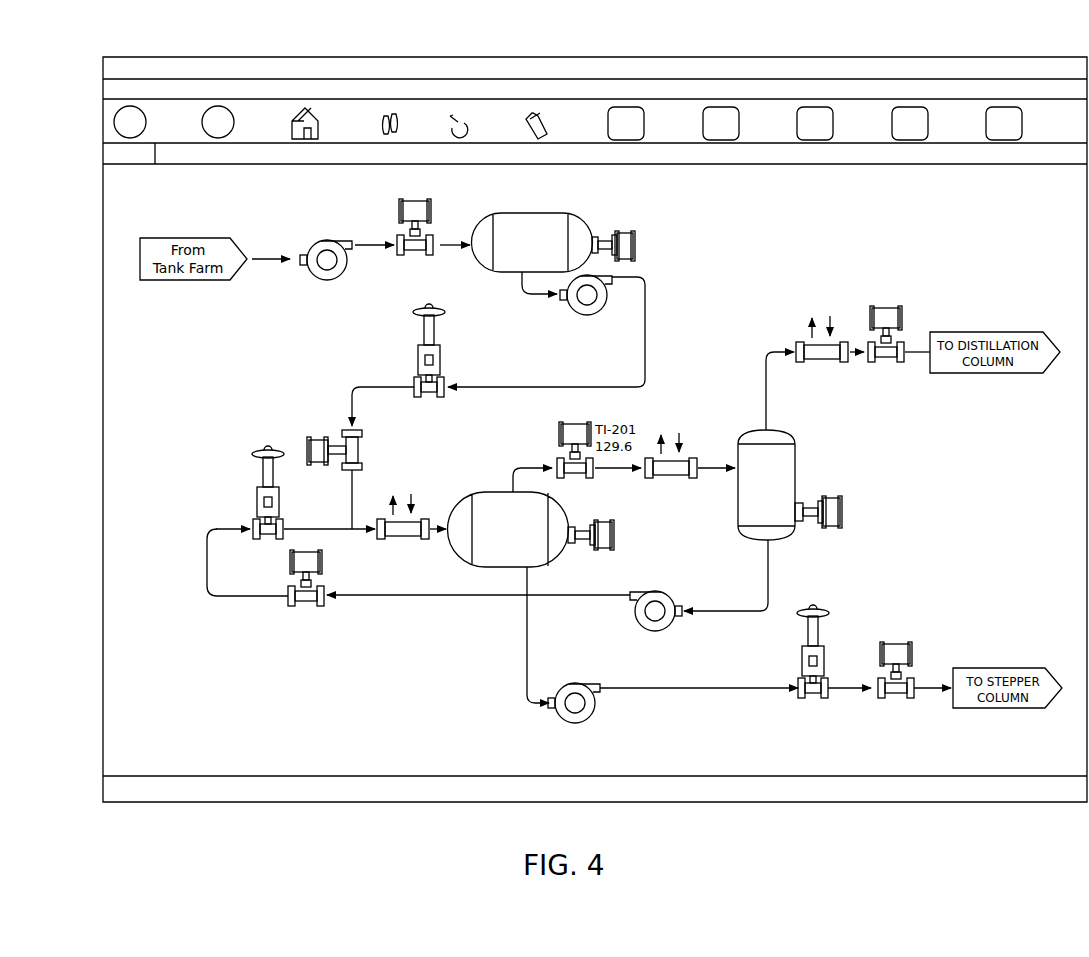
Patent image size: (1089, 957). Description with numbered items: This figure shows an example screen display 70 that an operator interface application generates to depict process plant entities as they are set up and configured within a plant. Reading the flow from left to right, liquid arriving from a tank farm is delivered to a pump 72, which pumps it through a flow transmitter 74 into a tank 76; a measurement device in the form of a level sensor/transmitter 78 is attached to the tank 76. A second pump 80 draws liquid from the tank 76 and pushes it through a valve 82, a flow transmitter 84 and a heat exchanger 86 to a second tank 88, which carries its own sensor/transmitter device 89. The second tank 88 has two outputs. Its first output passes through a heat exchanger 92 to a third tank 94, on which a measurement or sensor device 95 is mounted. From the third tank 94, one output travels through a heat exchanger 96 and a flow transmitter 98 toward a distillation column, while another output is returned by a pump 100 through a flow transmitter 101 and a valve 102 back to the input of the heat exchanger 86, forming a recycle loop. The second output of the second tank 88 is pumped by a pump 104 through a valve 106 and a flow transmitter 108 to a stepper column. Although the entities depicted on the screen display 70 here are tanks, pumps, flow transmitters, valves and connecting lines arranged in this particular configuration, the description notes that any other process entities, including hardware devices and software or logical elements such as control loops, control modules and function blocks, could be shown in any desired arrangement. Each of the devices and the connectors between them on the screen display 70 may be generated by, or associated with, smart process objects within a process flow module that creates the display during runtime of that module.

The screen display 70 is at (282, 750).
The pump 72 is at (321, 285).
The flow transmitter 74 is at (416, 256).
The tank 76 is at (517, 213).
The level sensor/transmitter 78 is at (627, 232).
The pump 80 is at (579, 314).
The valve 82 is at (443, 353).
The flow transmitter 84 is at (361, 455).
The heat exchanger 86 is at (405, 541).
The second tank 88 is at (481, 490).
The sensor/transmitter device 89 is at (601, 550).
The heat exchanger 92 is at (683, 478).
The third tank 94 is at (798, 467).
The measurement or sensor device 95 is at (843, 513).
The heat exchanger 96 is at (823, 364).
The flow transmitter 98 is at (885, 306).
The pump 100 is at (665, 632).
The flow transmitter 101 is at (302, 609).
The valve 102 is at (258, 482).
The pump 104 is at (572, 724).
The valve 106 is at (815, 700).
The flow transmitter 108 is at (893, 700).